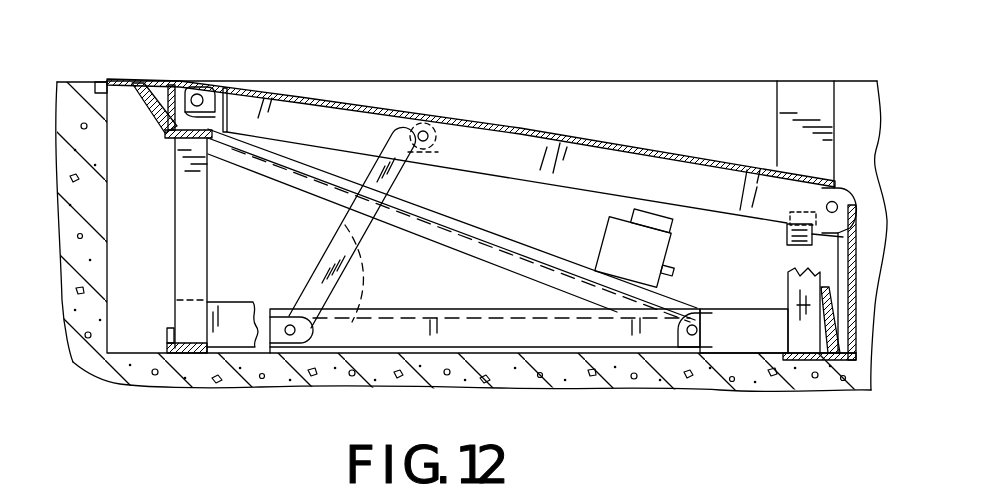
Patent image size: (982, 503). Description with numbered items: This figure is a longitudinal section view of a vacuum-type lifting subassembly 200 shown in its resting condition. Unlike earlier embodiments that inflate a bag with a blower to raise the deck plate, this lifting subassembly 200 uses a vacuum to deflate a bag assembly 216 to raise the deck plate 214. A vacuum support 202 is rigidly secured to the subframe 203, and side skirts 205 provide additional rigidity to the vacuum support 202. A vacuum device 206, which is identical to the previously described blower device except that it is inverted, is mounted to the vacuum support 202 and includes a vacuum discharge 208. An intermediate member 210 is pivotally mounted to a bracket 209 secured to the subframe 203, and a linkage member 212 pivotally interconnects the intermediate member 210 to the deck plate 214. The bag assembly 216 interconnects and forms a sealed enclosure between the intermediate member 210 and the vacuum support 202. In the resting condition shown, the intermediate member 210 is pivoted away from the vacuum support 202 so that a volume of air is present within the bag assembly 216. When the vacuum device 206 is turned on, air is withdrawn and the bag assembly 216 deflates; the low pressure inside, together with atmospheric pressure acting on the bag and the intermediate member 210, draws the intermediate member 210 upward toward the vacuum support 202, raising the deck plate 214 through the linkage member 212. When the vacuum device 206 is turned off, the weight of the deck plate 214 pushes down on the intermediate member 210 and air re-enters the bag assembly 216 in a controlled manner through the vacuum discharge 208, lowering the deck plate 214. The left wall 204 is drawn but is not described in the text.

The lifting subassembly 200 is at (294, 202).
The vacuum support 202 is at (527, 244).
The subframe 203 is at (807, 343).
The pit wall 204 is at (118, 347).
The side skirts 205 is at (496, 258).
The vacuum device 206 is at (680, 246).
The vacuum discharge 208 is at (670, 268).
The bracket 209 is at (677, 338).
The intermediate member 210 is at (275, 350).
The linkage member 212 is at (327, 247).
The deck plate 214 is at (390, 110).
The bag assembly 216 is at (425, 285).